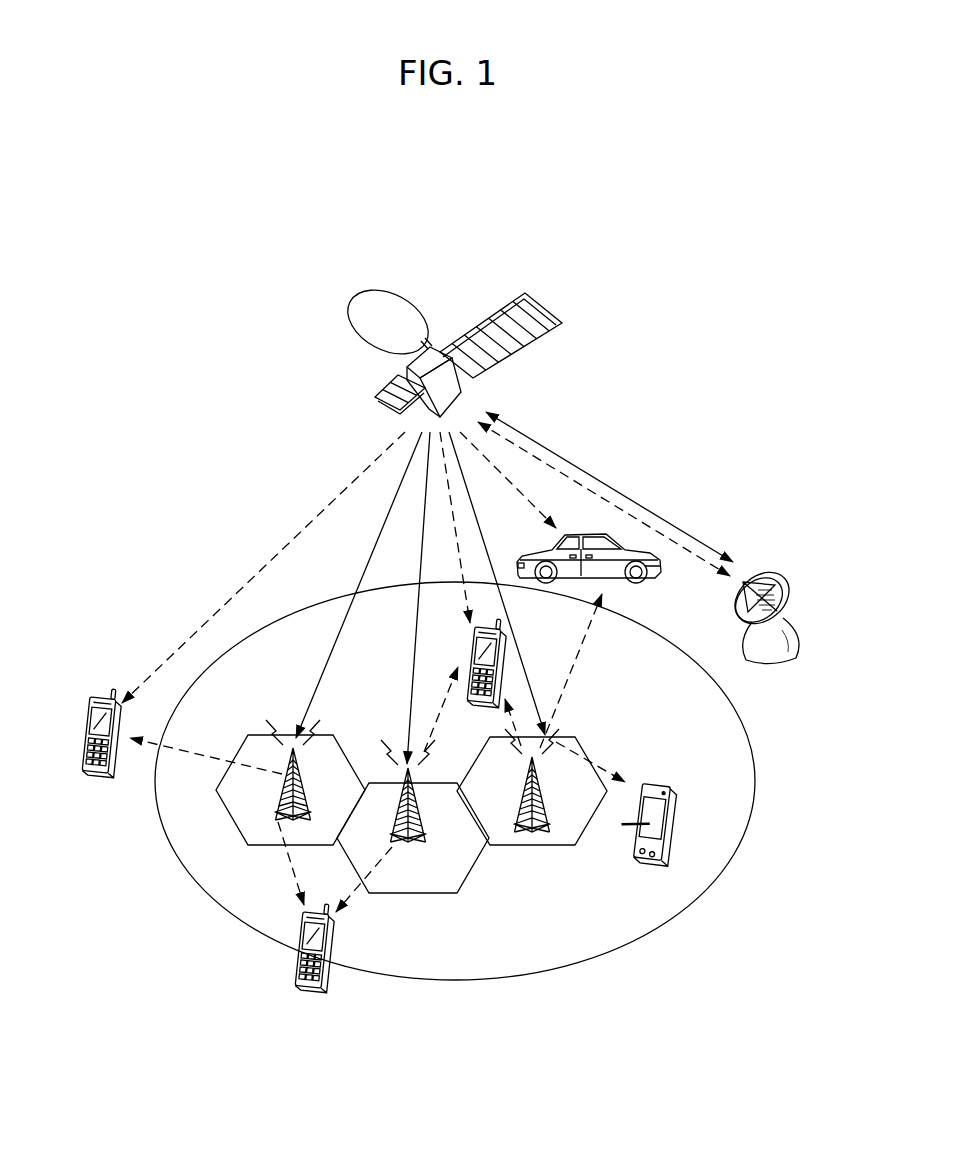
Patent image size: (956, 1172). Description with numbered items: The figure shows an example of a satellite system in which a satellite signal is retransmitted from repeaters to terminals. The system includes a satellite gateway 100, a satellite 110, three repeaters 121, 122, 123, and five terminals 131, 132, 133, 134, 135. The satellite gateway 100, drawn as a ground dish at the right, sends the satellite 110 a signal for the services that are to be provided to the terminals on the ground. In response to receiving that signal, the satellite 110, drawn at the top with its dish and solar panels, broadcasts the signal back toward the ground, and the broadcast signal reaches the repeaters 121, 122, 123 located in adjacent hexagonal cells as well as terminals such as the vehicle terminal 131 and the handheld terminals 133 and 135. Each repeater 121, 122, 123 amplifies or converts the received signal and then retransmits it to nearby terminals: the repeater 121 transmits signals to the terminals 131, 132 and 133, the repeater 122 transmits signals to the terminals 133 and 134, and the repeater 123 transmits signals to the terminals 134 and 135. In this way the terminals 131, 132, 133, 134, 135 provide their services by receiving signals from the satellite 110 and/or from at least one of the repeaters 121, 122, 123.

The satellite gateway 100 is at (769, 580).
The satellite 110 is at (518, 350).
The repeater 121 is at (540, 825).
The repeater 122 is at (404, 845).
The repeater 123 is at (283, 822).
The terminal 131 is at (650, 580).
The terminal 132 is at (660, 786).
The terminal 133 is at (500, 641).
The terminal 134 is at (298, 975).
The terminal 135 is at (100, 779).